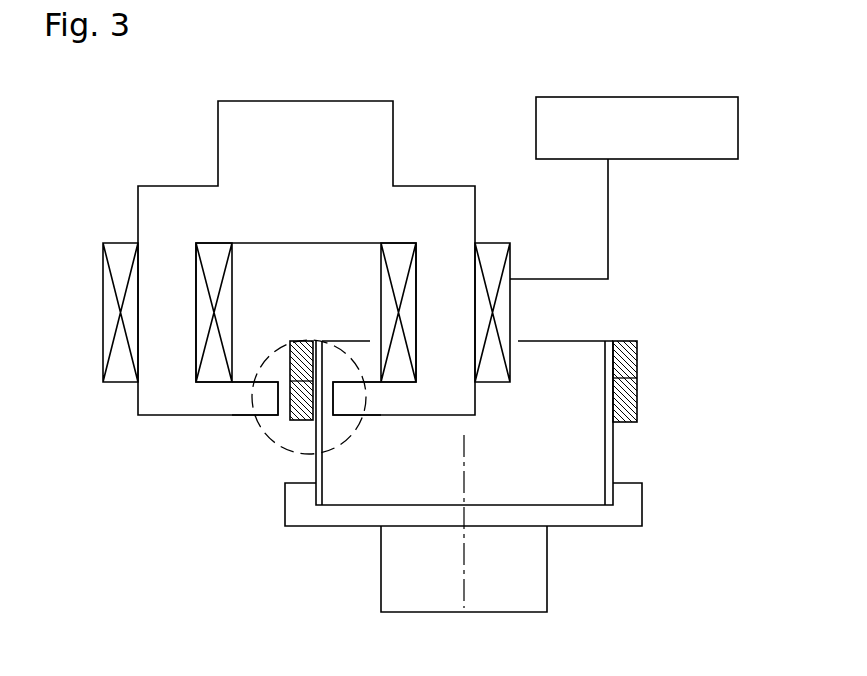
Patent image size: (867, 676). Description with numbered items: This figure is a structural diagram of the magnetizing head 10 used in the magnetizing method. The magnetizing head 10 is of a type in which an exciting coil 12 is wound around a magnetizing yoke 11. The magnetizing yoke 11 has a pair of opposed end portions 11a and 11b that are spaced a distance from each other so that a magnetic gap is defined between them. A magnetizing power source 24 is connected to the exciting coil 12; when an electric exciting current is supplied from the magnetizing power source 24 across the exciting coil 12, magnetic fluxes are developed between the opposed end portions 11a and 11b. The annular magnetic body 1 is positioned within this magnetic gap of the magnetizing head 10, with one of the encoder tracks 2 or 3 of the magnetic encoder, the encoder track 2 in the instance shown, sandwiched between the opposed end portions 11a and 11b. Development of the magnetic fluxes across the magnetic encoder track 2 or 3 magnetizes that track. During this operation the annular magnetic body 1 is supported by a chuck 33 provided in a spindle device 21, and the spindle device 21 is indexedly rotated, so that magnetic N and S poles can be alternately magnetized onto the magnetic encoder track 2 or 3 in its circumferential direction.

The annular magnetic body 1 is at (661, 341).
The magnetic encoder track 2 is at (302, 421).
The magnetic encoder track 3 is at (302, 341).
The magnetizing head 10 is at (366, 84).
The magnetizing yoke 11 is at (137, 205).
The opposed end portion 11a is at (258, 393).
The opposed end portion 11b is at (356, 393).
The exciting coil 12 is at (103, 277).
The spindle device 21 is at (547, 582).
The magnetizing power source 24 is at (738, 137).
The chuck 33 is at (642, 502).